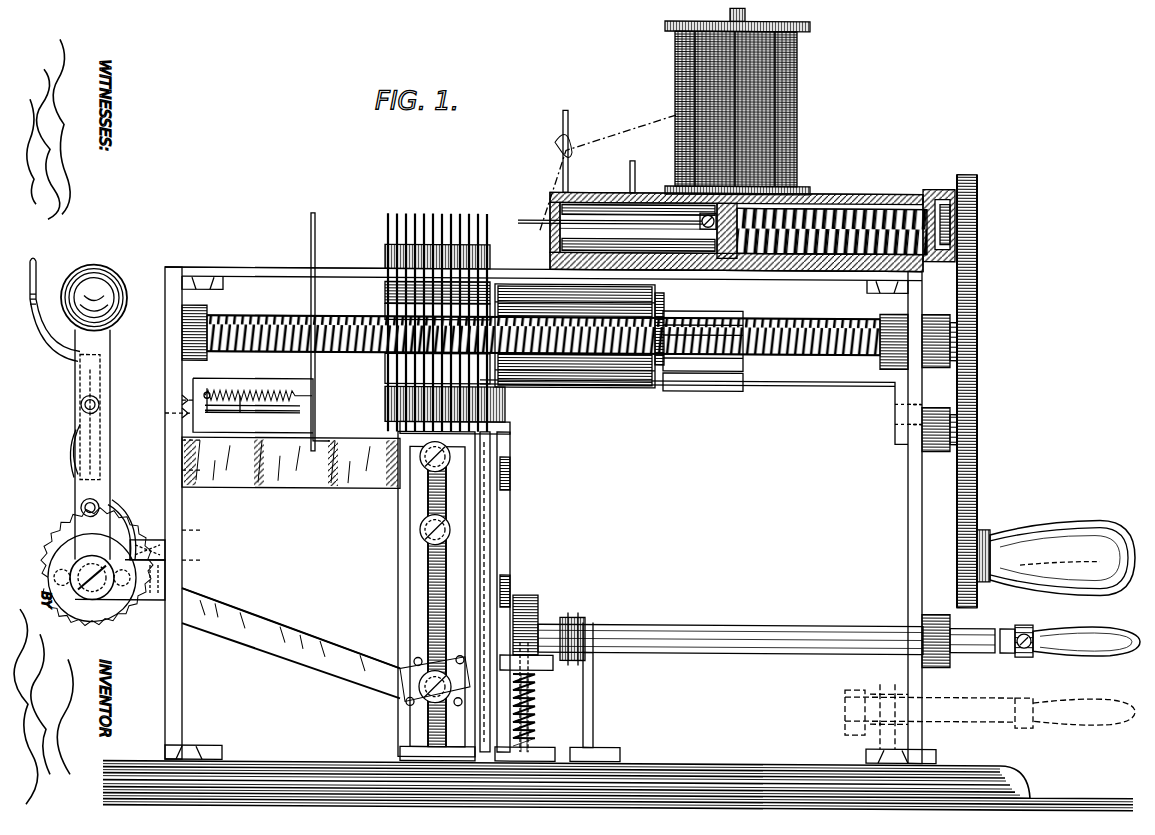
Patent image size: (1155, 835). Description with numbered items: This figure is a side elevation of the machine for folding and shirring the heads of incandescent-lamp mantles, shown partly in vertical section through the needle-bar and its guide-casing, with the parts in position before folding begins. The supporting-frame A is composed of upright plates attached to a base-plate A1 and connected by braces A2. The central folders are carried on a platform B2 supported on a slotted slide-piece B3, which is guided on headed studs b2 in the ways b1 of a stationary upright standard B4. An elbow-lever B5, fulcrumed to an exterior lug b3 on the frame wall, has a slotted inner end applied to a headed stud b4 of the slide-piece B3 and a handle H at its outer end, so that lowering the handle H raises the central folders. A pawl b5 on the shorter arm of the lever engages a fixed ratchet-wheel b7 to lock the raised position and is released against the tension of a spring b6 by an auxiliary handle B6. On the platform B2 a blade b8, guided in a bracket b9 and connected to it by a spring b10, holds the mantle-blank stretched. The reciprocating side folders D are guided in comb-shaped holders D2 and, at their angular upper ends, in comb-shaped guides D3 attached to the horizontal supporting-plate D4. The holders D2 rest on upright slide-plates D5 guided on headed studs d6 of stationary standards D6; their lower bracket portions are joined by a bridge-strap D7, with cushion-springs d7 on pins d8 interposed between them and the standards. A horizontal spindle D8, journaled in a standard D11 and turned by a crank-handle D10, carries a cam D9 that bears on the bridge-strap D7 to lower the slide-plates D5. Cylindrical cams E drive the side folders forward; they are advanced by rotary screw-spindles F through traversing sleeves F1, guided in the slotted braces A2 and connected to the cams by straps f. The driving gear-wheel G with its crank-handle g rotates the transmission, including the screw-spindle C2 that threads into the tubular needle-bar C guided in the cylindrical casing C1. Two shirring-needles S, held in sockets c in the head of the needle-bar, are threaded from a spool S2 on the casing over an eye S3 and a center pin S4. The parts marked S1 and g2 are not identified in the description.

The supporting-frame A is at (165, 518).
The base-plate A1 is at (690, 761).
The braces A2 is at (812, 382).
The handle H is at (100, 296).
The auxiliary handle B6 is at (42, 309).
The elbow-lever B5 is at (110, 396).
The spring b6 is at (72, 455).
The pawl b5 is at (124, 520).
The exterior lug b3 is at (145, 540).
The ratchet-wheel b7 is at (100, 620).
The slotted slide-piece B3 is at (415, 502).
The platform B2 is at (325, 408).
The bracket b9 is at (212, 414).
The spring b10 is at (245, 414).
The blade b8 is at (315, 250).
The horizontal supporting-plate D4 is at (262, 262).
The side folders D is at (437, 309).
The comb-shaped guides D3 is at (385, 250).
The comb-shaped holders D2 is at (385, 300).
The screw-spindles F is at (262, 310).
The cylindrical cams E is at (573, 388).
The straps f is at (664, 305).
The traversing sleeves F1 is at (703, 351).
The needle-bar C is at (790, 258).
The cylindrical casing C1 is at (562, 230).
The sockets c is at (702, 226).
The shirring-needles S is at (536, 218).
The eye S3 is at (560, 140).
The link S1 is at (617, 130).
The center pin S4 is at (640, 162).
The spool S2 is at (800, 130).
The screw-spindle C2 is at (915, 200).
The driving gear-wheel G is at (972, 490).
The pinion g2 is at (955, 383).
The crank-handle g is at (1056, 558).
The horizontal spindle D8 is at (765, 622).
The crank-handle D10 is at (1040, 630).
The upright standard B4 is at (410, 598).
The ways b1 is at (512, 506).
The headed studs b2 is at (382, 540).
The headed stud b4 is at (412, 682).
The upright slide-plates D5 is at (490, 545).
The headed studs d6 is at (510, 470).
The cam D9 is at (538, 606).
The bridge-strap D7 is at (553, 660).
The stationary upright standards D6 is at (512, 722).
The cushion-springs d7 is at (538, 698).
The pins d8 is at (538, 726).
The standard D11 is at (600, 724).